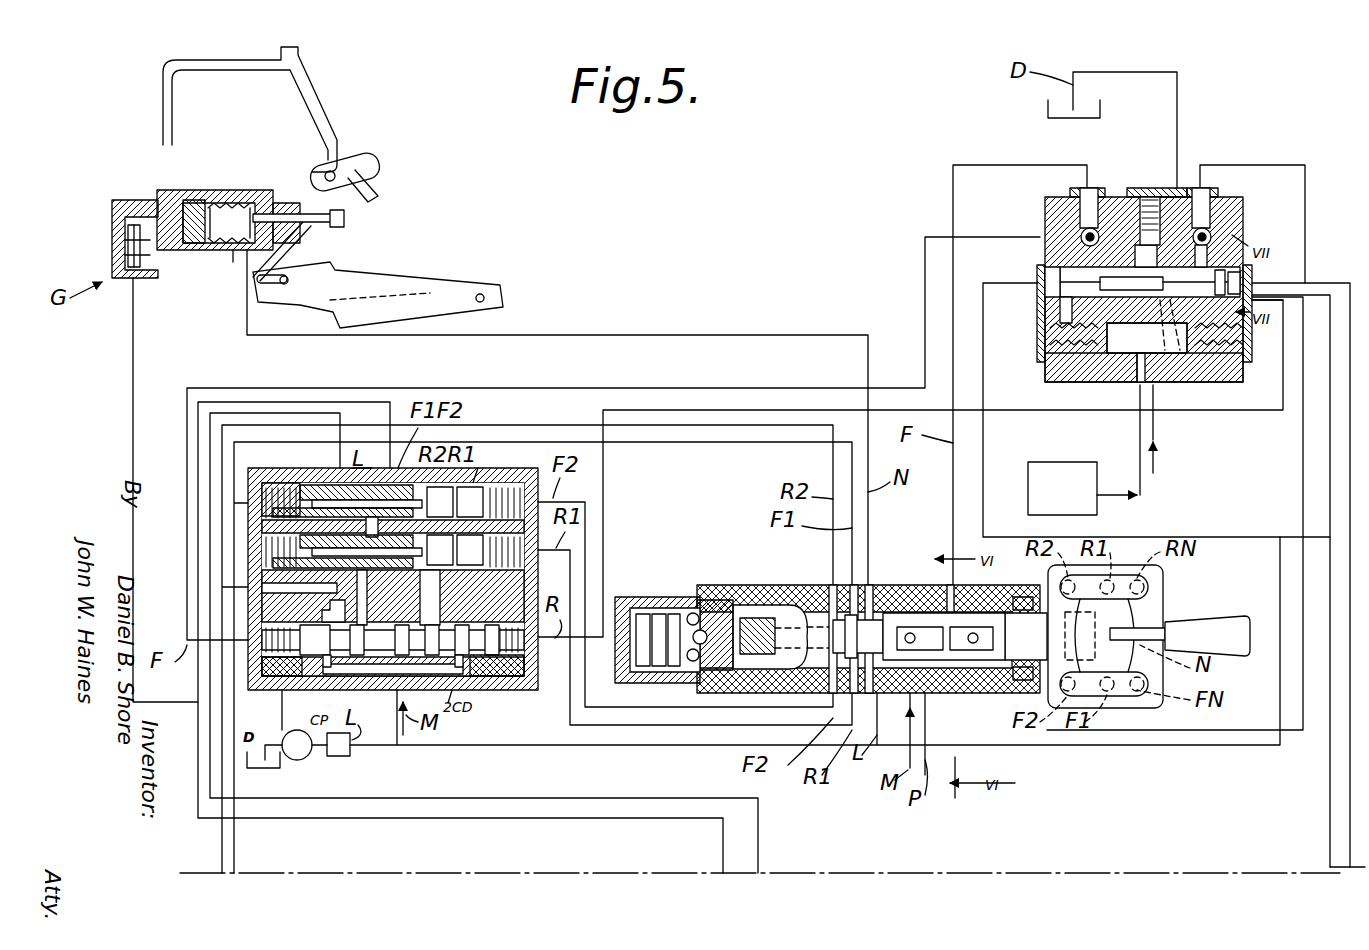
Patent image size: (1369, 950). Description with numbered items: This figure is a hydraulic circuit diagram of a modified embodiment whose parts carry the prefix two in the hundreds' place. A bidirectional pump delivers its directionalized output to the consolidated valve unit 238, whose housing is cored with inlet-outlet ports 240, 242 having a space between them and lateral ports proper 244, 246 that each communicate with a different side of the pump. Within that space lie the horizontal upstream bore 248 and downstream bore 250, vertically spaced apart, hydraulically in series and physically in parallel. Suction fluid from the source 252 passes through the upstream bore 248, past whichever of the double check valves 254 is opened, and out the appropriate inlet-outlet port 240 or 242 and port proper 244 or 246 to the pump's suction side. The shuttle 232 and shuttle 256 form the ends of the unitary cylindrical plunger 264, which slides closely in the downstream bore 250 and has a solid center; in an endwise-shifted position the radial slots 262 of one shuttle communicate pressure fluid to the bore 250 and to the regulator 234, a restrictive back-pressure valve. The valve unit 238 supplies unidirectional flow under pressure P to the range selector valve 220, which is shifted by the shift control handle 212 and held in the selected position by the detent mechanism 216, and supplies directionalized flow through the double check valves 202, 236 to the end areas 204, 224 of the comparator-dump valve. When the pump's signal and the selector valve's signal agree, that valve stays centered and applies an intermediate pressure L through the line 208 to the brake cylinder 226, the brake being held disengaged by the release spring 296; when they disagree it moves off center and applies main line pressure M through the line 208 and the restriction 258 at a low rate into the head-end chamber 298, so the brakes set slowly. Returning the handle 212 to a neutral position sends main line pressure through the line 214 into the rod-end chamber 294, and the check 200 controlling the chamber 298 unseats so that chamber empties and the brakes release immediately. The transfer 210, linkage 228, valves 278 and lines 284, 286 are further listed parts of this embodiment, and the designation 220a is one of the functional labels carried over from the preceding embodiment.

The check 200 is at (112, 232).
The checks 202 is at (1105, 197).
The area 204 is at (278, 668).
The line 208 is at (133, 370).
The transfer 210 is at (434, 602).
The shift control handle 212 is at (1205, 628).
The line 214 is at (598, 335).
The detent mechanism 216 is at (672, 610).
The range selector valve 220 is at (770, 585).
The functional designation 220a is at (912, 600).
The area 224 is at (503, 690).
The brake cylinder 226 is at (190, 252).
The linkage 228 is at (362, 320).
The shuttle 232 is at (1212, 228).
The regulator 234 is at (1160, 195).
The checks 236 is at (1205, 245).
The consolidated valve unit 238 is at (282, 694).
The inlet-outlet port 240 is at (1043, 312).
The inlet-outlet port 242 is at (1238, 282).
The lateral port proper 244 is at (1045, 275).
The lateral port proper 246 is at (1283, 300).
The upstream bore 248 is at (1158, 365).
The downstream bore 250 is at (1180, 340).
The source 252 is at (1085, 501).
The double check valves 254 is at (1060, 370).
The shuttle 256 is at (1080, 250).
The restriction 258 is at (112, 210).
The radial slots 262 is at (1228, 268).
The unitary cylindrical plunger 264 is at (322, 770).
The valves 278 is at (258, 474).
The line 284 is at (198, 418).
The line 286 is at (210, 447).
The chamber 294 is at (233, 262).
The release spring 296 is at (212, 250).
The chamber 298 is at (193, 200).